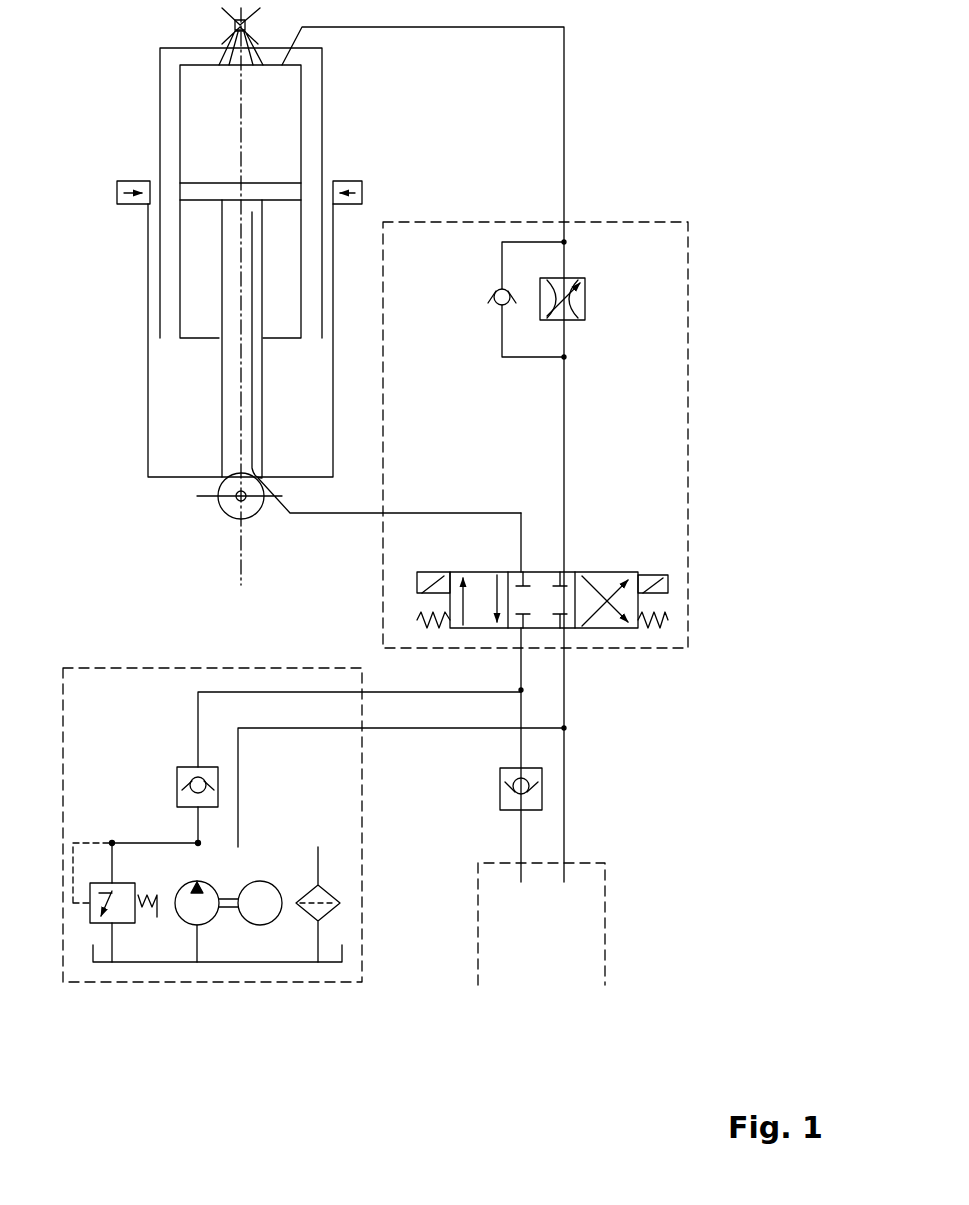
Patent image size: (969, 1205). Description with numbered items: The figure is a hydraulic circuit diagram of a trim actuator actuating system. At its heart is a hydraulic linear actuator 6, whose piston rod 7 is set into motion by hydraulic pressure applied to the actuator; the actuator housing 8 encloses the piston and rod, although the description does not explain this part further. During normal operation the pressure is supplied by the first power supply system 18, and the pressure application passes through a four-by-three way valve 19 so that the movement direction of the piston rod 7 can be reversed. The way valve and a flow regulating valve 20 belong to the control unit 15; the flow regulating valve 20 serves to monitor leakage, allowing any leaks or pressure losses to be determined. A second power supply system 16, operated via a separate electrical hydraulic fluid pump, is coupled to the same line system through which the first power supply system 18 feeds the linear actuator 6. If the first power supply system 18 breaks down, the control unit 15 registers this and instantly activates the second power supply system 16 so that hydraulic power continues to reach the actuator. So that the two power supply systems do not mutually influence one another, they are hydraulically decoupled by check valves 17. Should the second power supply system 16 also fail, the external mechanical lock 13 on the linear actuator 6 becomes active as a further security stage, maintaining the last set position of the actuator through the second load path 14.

The hydraulic linear actuator 6 is at (307, 142).
The piston rod 7 is at (218, 400).
The outer housing 8 is at (180, 140).
The external lock 13 is at (362, 182).
The second load path 14 is at (335, 298).
The control unit 15 is at (607, 213).
The second power supply system 16 is at (178, 668).
The check valves 17 is at (220, 797).
The first power supply system 18 is at (600, 860).
The 4/3 way valve 19 is at (610, 563).
The flow regulating valve 20 is at (597, 297).